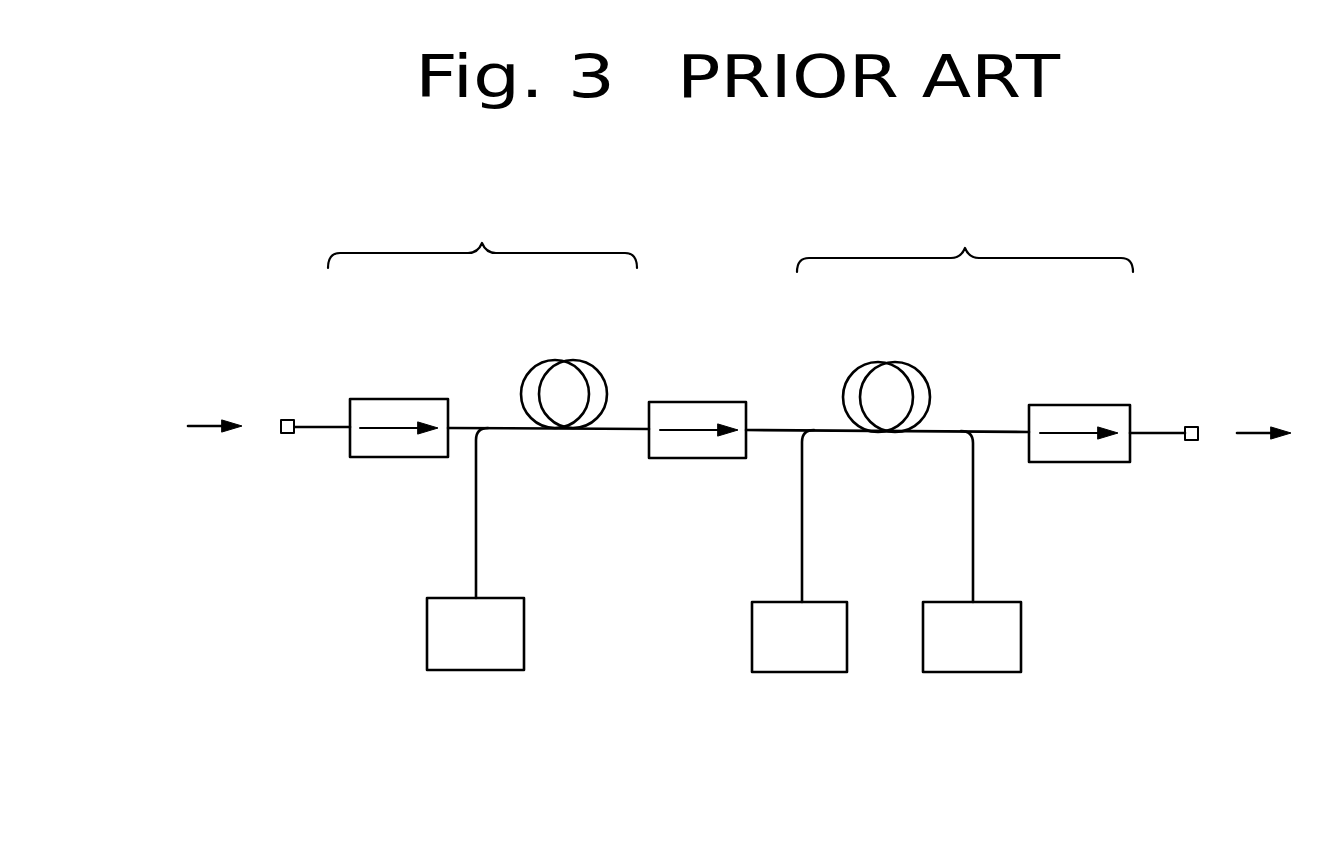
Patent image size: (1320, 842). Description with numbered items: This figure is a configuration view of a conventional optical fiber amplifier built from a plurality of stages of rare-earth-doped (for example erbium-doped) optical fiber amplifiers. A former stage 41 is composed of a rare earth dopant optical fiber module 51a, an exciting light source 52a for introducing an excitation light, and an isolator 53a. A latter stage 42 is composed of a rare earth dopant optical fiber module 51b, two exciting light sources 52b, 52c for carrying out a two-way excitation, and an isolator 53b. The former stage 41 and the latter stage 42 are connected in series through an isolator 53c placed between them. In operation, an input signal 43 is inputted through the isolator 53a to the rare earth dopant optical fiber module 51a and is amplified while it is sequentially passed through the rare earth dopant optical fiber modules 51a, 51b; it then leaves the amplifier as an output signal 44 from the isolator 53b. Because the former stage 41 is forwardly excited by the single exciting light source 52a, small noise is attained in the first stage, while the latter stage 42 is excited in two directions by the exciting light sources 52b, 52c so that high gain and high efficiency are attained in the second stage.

The former stage 41 is at (482, 239).
The latter stage 42 is at (965, 242).
The input signal 43 is at (203, 426).
The output signal 44 is at (1250, 433).
The rare earth dopant optical fiber module 51a is at (535, 365).
The rare earth dopant optical fiber module 51b is at (858, 367).
The exciting light source 52a is at (475, 670).
The exciting light source 52b is at (800, 672).
The exciting light source 52c is at (973, 672).
The isolator 53a is at (405, 398).
The isolator 53b is at (1082, 405).
The isolator 53c is at (700, 402).